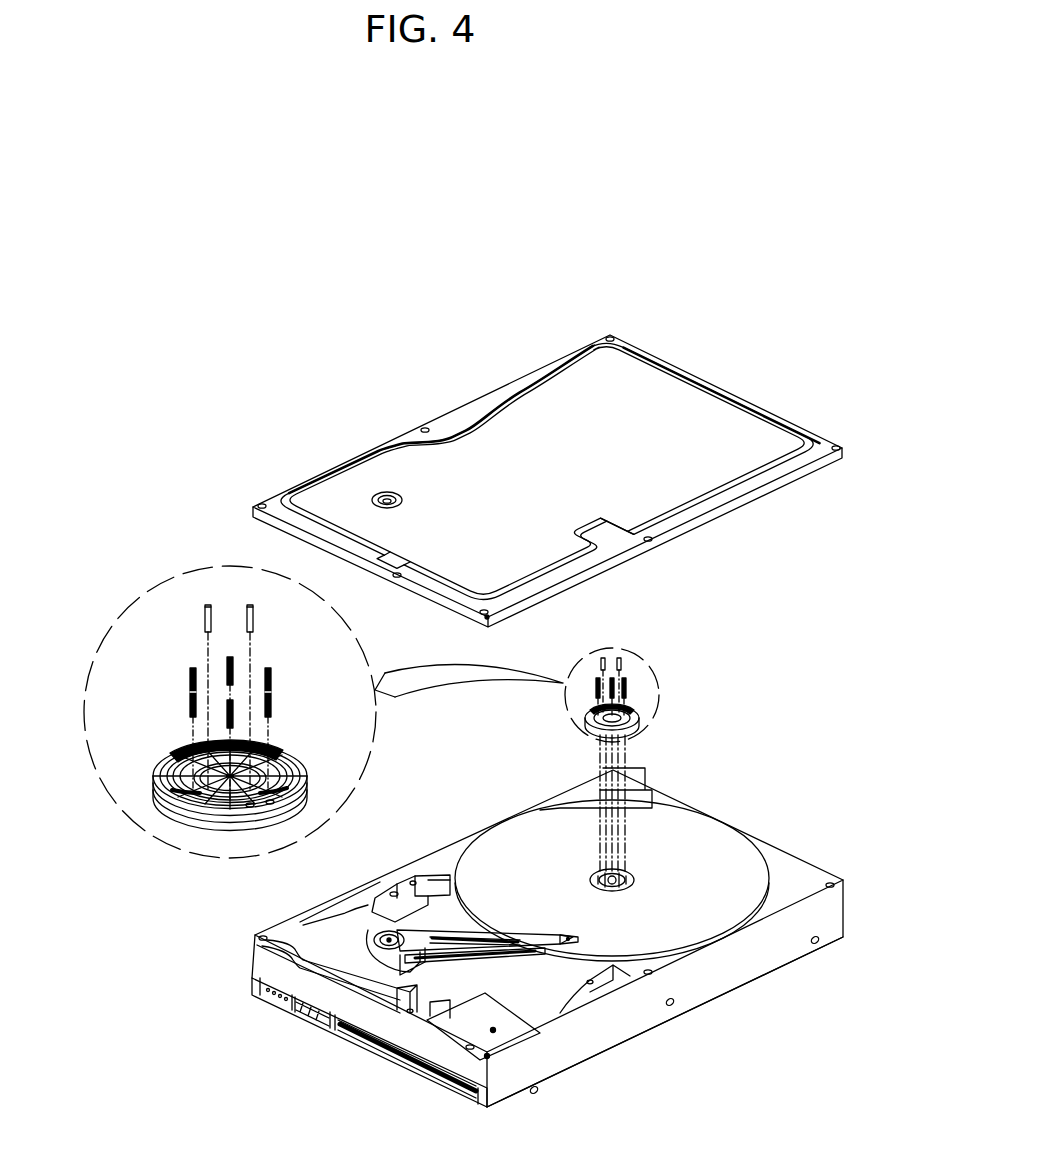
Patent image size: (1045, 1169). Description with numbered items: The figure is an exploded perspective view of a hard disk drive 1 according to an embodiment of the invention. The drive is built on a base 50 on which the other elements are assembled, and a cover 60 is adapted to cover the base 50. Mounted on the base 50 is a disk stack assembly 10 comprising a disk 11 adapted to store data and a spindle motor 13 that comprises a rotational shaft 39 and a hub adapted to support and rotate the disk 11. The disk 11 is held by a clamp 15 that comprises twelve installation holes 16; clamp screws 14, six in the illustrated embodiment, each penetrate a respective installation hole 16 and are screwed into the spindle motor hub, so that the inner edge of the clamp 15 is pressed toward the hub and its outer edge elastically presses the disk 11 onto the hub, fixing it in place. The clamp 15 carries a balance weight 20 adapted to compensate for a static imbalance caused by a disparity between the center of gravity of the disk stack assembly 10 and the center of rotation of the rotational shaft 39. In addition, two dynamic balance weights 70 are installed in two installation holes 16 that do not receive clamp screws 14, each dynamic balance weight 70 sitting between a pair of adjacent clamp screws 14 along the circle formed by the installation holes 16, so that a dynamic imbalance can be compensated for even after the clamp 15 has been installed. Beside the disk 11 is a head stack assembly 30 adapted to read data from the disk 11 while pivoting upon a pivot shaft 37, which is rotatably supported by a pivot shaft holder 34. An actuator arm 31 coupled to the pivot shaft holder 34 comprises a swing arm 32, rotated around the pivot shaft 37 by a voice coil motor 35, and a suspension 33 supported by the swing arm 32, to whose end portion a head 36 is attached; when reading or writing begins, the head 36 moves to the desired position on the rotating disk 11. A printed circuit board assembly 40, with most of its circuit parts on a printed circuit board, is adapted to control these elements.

The hard disk drive 1 is at (226, 322).
The disk stack assembly 10 is at (547, 873).
The disk 11 is at (650, 826).
The spindle motor 13 is at (638, 870).
The clamp screw 14 is at (272, 676).
The clamp 15 is at (282, 777).
The installation holes 16 is at (270, 805).
The balance weight 20 is at (162, 758).
The head stack assembly 30 is at (473, 970).
The actuator arm 31 is at (487, 897).
The swing arm 32 is at (500, 930).
The suspension 33 is at (562, 916).
The pivot shaft holder 34 is at (404, 880).
The voice coil motor 35 is at (340, 925).
The head 36 is at (450, 967).
The pivot shaft 37 is at (408, 932).
The rotational shaft 39 is at (770, 967).
The printed circuit board assembly 40 is at (380, 1068).
The base 50 is at (547, 937).
The cover 60 is at (710, 400).
The dynamic balance weight 70 is at (186, 605).